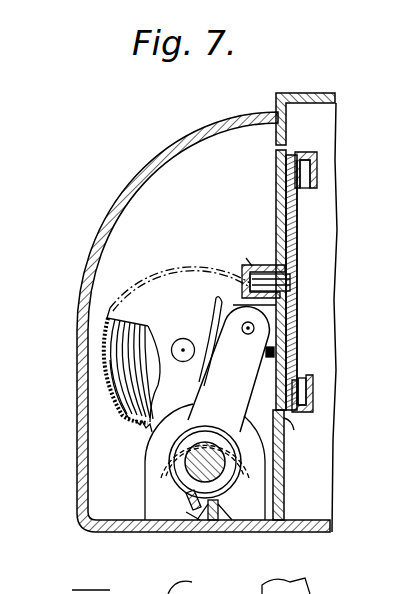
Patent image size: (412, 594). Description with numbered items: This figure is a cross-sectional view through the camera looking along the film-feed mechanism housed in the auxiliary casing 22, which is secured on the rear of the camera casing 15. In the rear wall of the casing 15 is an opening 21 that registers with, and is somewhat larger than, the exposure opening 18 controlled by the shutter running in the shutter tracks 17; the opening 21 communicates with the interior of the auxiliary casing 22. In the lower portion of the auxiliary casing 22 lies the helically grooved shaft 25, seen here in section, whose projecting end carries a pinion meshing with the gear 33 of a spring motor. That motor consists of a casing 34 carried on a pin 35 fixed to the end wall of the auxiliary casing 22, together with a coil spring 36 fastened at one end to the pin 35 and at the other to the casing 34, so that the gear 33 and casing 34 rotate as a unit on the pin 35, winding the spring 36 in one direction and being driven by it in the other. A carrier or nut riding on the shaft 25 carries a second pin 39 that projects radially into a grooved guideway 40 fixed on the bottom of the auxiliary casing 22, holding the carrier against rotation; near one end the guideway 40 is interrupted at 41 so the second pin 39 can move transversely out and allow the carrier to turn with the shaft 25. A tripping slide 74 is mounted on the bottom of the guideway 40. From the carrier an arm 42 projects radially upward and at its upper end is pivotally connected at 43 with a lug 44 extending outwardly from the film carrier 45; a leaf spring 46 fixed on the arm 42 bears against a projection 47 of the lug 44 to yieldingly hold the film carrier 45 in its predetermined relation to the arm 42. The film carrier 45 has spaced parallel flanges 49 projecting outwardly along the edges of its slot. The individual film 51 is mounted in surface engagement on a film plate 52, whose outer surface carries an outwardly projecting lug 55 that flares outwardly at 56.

The casing 15 is at (343, 82).
The shutter tracks 17 is at (317, 168).
The exposure opening 18 is at (318, 190).
The opening 21 is at (286, 157).
The auxiliary casing 22 is at (152, 164).
The shaft 25 is at (190, 465).
The gear 33 is at (147, 428).
The casing 34 is at (106, 343).
The pin 35 is at (181, 340).
The coil spring 36 is at (110, 384).
The second pin 39 is at (186, 500).
The grooved guideway 40 is at (233, 522).
The interruption 41 is at (184, 512).
The arm 42 is at (215, 402).
The pivot 43 is at (246, 334).
The lug 44 is at (284, 312).
The film carrier 45 is at (279, 229).
The leaf spring 46 is at (217, 305).
The projection 47 is at (248, 272).
The flanges 49 is at (246, 268).
The film 51 is at (298, 211).
The film plate 52 is at (289, 182).
The lug 55 is at (287, 278).
The flaring portion 56 is at (246, 258).
The tripping slide 74 is at (212, 526).